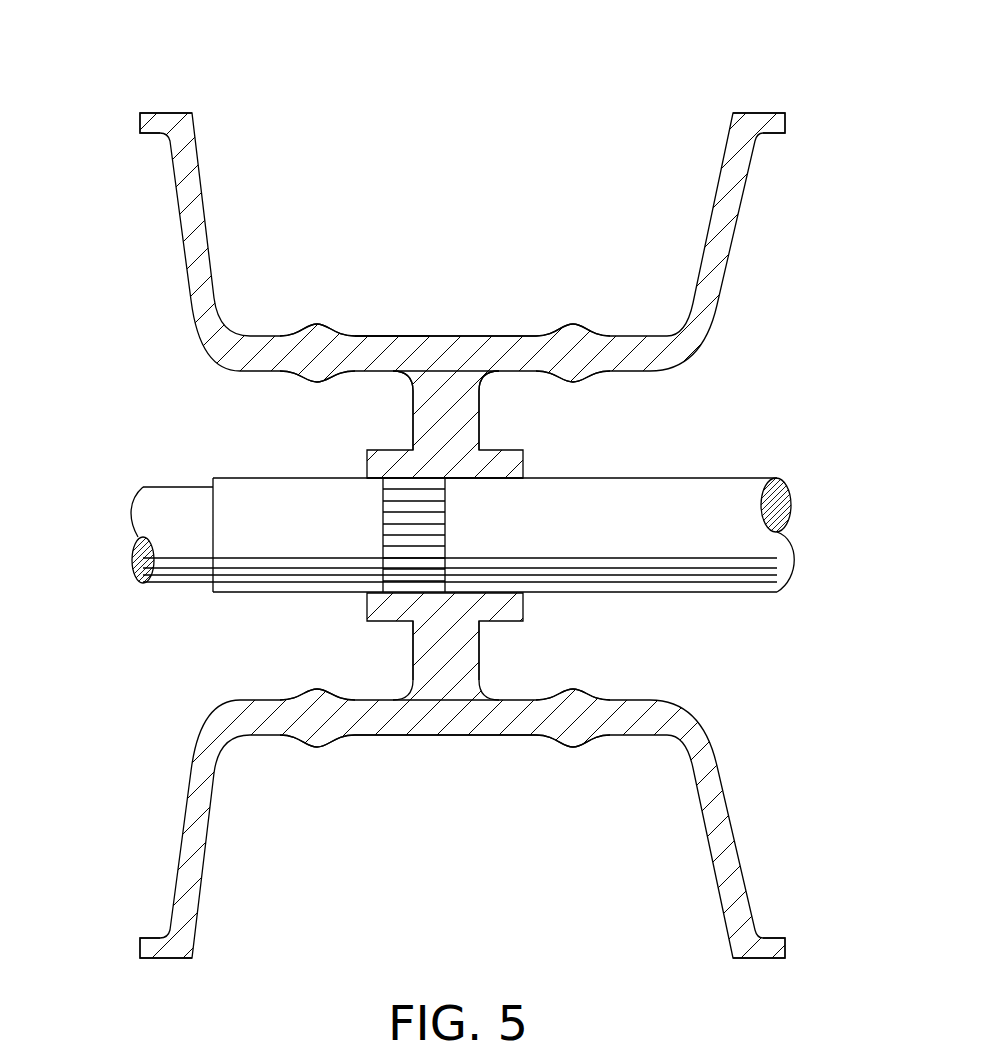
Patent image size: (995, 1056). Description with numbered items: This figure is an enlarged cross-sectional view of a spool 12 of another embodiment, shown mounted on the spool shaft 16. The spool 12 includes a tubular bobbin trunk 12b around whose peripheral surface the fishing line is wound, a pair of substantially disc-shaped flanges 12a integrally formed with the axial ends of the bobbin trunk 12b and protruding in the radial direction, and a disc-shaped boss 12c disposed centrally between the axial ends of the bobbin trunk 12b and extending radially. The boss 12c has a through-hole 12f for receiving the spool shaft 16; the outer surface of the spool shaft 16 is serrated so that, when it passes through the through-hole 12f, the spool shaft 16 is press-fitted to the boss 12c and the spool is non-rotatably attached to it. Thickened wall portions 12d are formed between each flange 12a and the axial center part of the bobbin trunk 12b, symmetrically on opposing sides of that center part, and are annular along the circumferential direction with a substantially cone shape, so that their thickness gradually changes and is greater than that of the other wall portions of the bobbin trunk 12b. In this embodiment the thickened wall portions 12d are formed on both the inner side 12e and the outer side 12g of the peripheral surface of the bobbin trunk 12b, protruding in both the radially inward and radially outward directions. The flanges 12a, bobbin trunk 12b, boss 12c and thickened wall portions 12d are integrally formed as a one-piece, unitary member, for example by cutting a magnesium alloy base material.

The spool 12 is at (455, 157).
The flange 12a is at (200, 190).
The bobbin trunk 12b is at (482, 336).
The boss 12c is at (440, 640).
The thickened wall portion 12d is at (318, 327).
The inner side of the peripheral surface of the bobbin trunk 12e is at (383, 373).
The through-hole 12f is at (503, 478).
The outer side of the peripheral surface of the bobbin trunk 12g is at (388, 334).
The spool shaft 16 is at (613, 533).